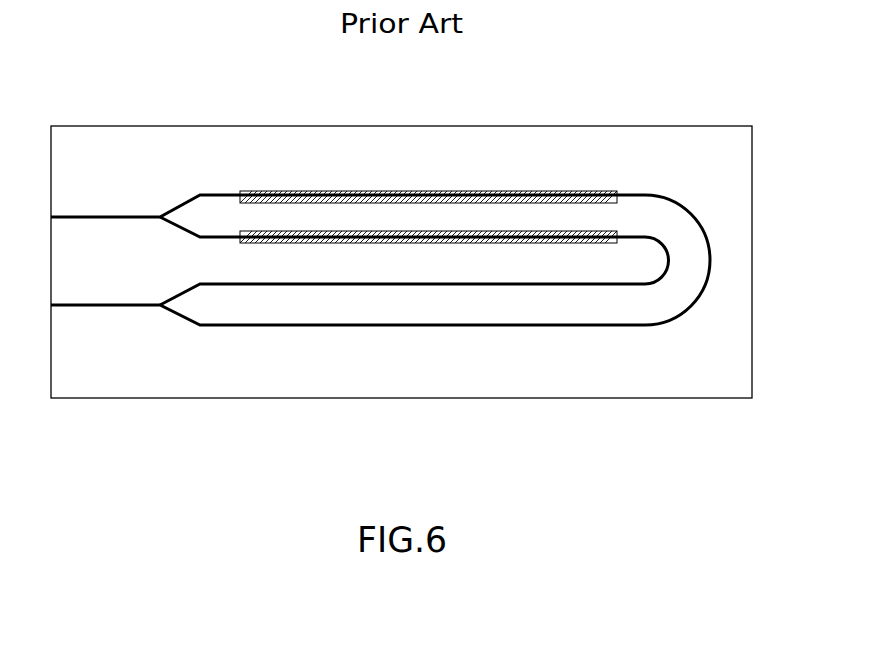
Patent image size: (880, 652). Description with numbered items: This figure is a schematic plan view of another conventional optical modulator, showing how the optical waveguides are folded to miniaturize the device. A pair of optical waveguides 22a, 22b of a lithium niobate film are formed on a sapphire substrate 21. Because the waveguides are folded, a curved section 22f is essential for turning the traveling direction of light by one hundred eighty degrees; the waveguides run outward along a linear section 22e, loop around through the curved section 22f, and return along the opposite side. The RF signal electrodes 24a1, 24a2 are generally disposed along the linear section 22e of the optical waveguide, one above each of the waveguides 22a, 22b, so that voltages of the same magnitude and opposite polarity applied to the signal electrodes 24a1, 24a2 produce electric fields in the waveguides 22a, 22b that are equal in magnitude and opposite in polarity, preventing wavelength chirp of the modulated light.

The sapphire substrate 21 is at (161, 126).
The optical waveguide 22a is at (245, 327).
The optical waveguide 22b is at (300, 286).
The linear section 22e is at (503, 190).
The curved section 22f is at (685, 323).
The signal electrode 24a1 is at (321, 190).
The signal electrode 24a2 is at (374, 231).